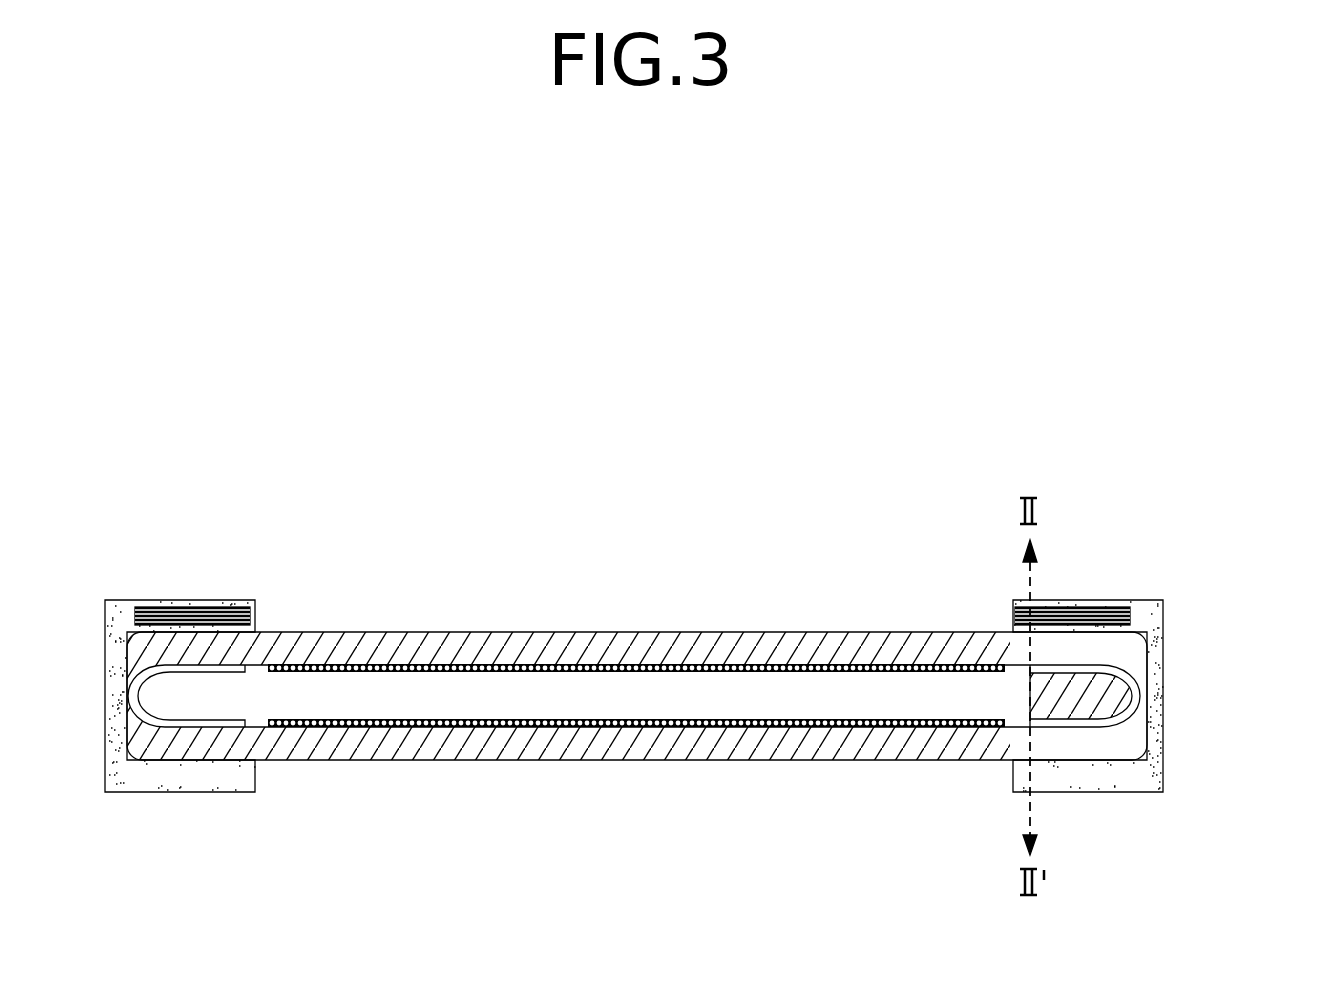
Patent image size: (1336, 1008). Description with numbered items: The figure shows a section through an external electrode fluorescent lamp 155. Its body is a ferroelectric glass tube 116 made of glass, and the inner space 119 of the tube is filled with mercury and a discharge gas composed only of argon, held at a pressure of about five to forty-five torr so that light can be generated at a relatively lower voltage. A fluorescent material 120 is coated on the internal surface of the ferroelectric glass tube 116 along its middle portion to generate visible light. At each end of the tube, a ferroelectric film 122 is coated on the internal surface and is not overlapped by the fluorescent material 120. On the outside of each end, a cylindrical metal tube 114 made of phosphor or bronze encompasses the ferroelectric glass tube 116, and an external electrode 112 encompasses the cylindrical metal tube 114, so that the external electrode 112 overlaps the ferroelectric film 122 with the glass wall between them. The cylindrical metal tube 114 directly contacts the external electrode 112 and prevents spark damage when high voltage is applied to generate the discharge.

The external electrode 112 is at (1152, 778).
The cylindrical metal tube 114 is at (1114, 617).
The ferroelectric glass tube 116 is at (453, 632).
The inner space 119 is at (886, 690).
The fluorescent material 120 is at (313, 665).
The ferroelectric film 122 is at (1148, 680).
The external electrode fluorescent lamp 155 is at (1155, 413).